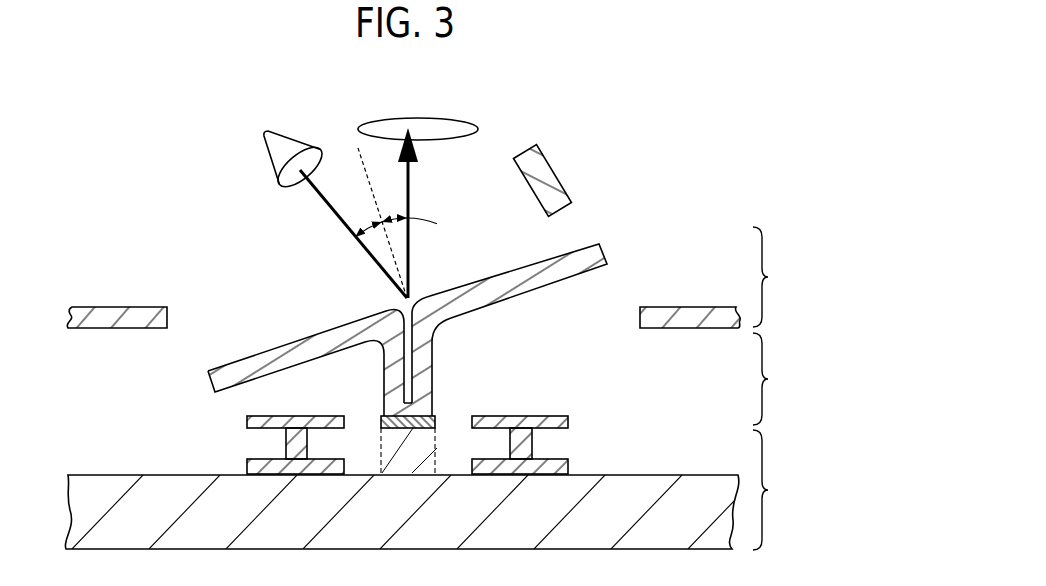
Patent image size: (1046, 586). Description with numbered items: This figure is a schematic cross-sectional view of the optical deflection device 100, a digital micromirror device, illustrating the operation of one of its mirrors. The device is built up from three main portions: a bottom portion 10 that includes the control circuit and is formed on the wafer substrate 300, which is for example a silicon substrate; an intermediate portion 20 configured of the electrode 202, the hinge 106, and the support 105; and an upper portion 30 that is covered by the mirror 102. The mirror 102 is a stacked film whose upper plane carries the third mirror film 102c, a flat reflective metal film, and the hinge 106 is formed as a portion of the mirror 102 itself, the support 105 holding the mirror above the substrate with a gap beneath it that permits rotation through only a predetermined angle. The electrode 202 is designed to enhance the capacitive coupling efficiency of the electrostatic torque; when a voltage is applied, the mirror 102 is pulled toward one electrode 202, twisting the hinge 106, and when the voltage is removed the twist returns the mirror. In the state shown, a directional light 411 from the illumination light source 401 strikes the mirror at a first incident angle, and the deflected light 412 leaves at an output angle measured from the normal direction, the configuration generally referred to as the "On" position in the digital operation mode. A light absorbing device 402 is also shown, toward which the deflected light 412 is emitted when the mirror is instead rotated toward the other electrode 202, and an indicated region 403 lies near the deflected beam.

The optical deflection device 100 is at (697, 102).
The bottom portion 10 is at (771, 490).
The intermediate portion 20 is at (771, 379).
The upper portion 30 is at (772, 277).
The mirror 102 is at (95, 303).
The third mirror film 102c is at (482, 287).
The support 105 is at (435, 357).
The hinge 106 is at (437, 422).
The electrode 202 is at (247, 420).
The wafer substrate 300 is at (690, 485).
The illumination light source 401 is at (262, 128).
The light absorbing device 402 is at (555, 163).
The emission region 403 is at (380, 132).
The directional light 411 is at (337, 223).
The deflected light 412 is at (410, 195).